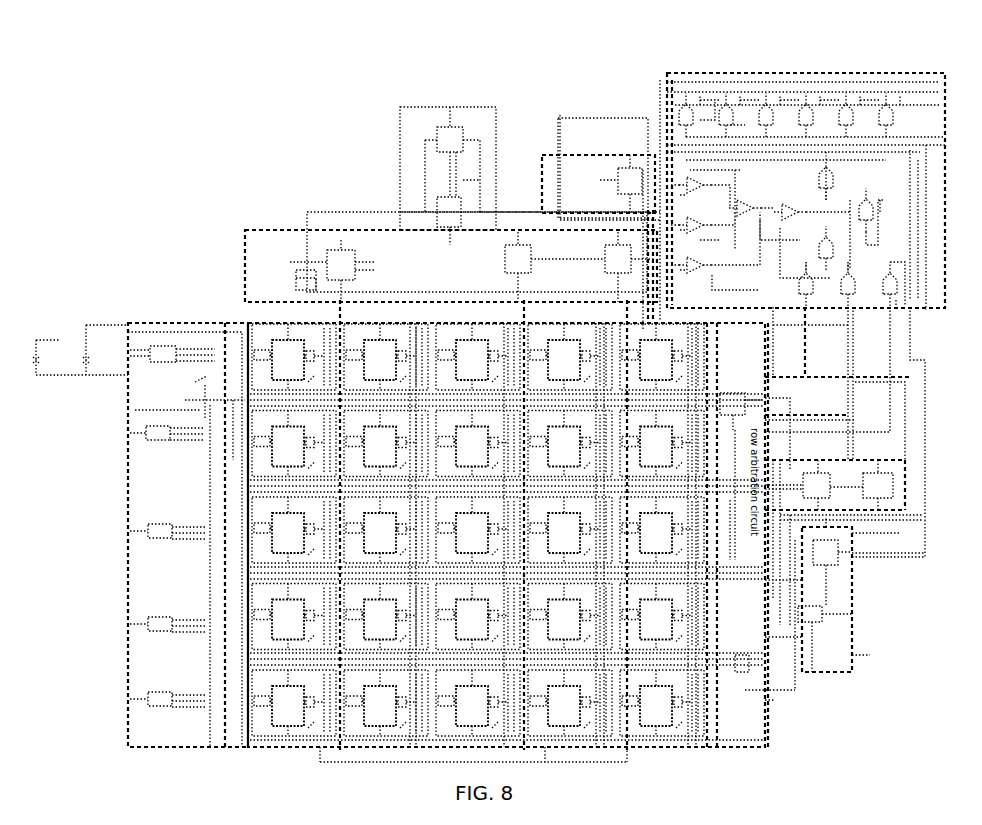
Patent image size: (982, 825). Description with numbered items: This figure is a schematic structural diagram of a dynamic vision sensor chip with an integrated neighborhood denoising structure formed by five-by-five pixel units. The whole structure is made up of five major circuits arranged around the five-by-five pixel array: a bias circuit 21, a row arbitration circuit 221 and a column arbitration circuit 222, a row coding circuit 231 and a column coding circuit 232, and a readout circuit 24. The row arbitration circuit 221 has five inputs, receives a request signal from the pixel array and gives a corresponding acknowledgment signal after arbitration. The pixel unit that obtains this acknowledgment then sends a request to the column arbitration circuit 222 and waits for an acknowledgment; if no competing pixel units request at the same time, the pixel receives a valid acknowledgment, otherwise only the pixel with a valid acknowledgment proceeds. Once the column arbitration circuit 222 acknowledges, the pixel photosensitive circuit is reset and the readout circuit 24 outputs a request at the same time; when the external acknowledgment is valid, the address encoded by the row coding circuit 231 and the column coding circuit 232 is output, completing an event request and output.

The bias circuit 21 is at (170, 322).
The row arbitration circuit 221 is at (766, 706).
The column arbitration circuit 222 is at (290, 230).
The column coding circuit 232 is at (602, 150).
The row coding circuit 231 is at (852, 648).
The readout circuit 24 is at (748, 72).